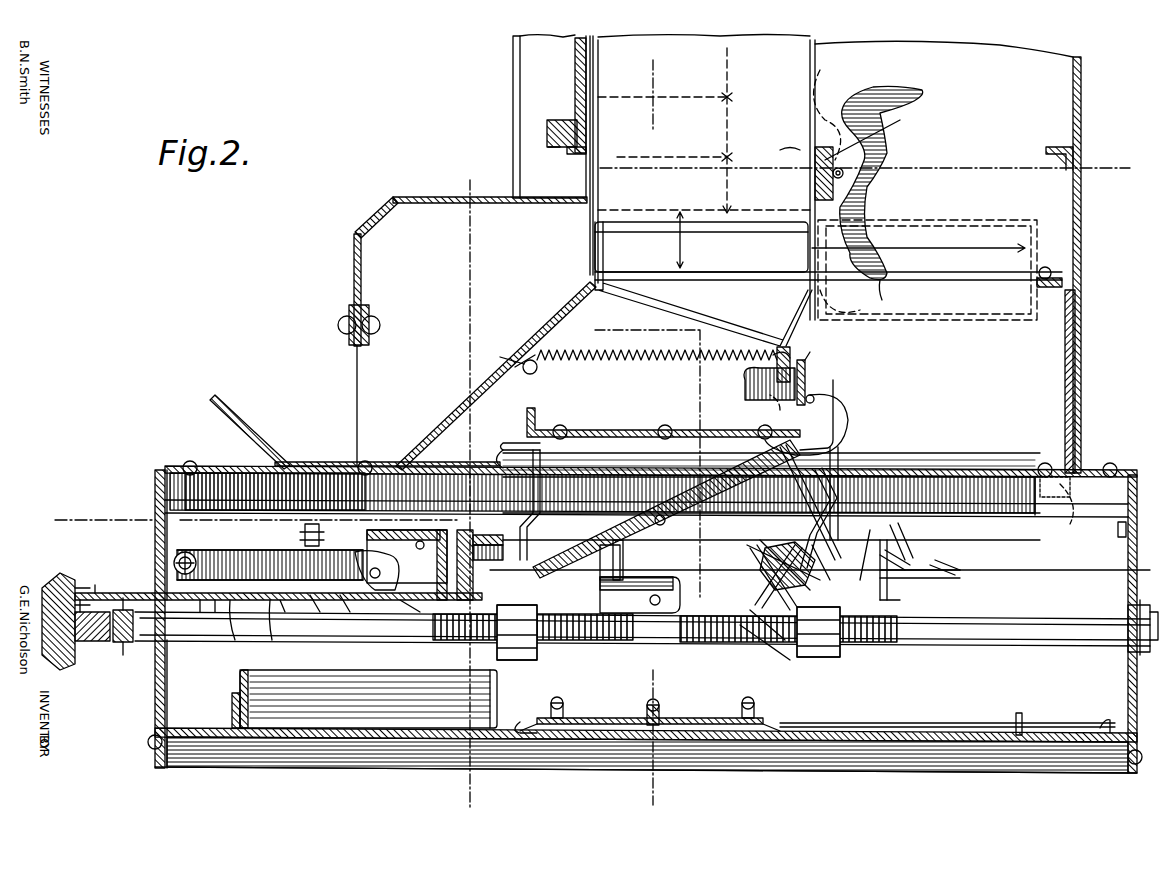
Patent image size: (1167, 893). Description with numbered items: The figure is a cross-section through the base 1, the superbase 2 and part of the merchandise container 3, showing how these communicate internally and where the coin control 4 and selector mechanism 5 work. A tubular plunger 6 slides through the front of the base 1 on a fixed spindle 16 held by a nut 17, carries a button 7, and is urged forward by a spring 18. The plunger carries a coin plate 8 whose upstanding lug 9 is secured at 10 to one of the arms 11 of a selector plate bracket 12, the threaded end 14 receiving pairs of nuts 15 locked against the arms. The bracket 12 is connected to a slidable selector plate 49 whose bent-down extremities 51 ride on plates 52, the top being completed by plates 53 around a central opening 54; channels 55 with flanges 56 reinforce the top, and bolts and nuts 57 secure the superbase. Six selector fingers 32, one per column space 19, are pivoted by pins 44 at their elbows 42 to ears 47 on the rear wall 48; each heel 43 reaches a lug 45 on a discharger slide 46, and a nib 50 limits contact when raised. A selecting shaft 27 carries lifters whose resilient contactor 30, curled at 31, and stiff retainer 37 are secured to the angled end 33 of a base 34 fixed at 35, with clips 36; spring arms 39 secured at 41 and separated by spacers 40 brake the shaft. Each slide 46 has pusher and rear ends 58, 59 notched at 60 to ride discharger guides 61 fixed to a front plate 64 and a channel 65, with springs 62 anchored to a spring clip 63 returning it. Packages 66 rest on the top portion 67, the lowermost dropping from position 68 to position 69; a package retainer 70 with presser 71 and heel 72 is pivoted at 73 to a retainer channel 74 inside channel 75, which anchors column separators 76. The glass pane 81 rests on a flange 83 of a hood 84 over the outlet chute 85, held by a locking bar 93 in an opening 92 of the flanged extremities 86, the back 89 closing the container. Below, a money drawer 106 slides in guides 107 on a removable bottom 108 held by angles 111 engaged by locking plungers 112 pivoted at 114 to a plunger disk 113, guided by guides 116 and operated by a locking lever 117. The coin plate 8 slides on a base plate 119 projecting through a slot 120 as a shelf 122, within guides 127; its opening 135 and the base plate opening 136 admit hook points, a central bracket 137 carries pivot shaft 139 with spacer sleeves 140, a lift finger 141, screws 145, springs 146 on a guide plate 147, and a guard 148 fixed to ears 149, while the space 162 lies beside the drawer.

The base 1 is at (143, 494).
The superbase 2 is at (340, 306).
The merchandise container 3 is at (497, 60).
The coin control 4 is at (477, 185).
The selector mechanism 5 is at (598, 87).
The tubular plunger 6 is at (150, 642).
The button 7 is at (65, 672).
The coin plate 8 is at (418, 642).
The upstanding lug 9 is at (462, 520).
The securing point 10 is at (490, 555).
The arms 11 is at (542, 492).
The selector plate bracket 12 is at (633, 430).
The threaded inner end 14 is at (880, 648).
The nuts 15 is at (535, 655).
The spindle 16 is at (990, 640).
The nut 17 is at (1125, 598).
The spring 18 is at (118, 642).
The column spaces 19 is at (760, 58).
The selecting shaft 27 is at (788, 575).
The resilient contactor 30 is at (760, 660).
The curled end 31 is at (808, 660).
The selector finger 32 is at (592, 440).
The angled end 33 is at (950, 560).
The base 34 is at (735, 580).
The securing point 35 is at (763, 552).
The clips 36 is at (930, 555).
The stiff retainer 37 is at (905, 540).
The spring arms 39 is at (680, 580).
The spacers 40 is at (612, 556).
The securing point 41 is at (640, 642).
The elbow 42 is at (818, 412).
The heel 43 is at (748, 388).
The pivot pin 44 is at (815, 398).
The lug 45 is at (792, 360).
The discharger slide 46 is at (786, 310).
The ears 47 is at (800, 402).
The rear upstanding wall 48 is at (812, 372).
The selector plate 49 is at (668, 428).
The nib 50 is at (560, 445).
The bent-down side extremities 51 is at (510, 440).
The plates 52 is at (940, 465).
The plates 53 is at (212, 462).
The central opening 54 is at (991, 461).
The channels 55 is at (1020, 505).
The flanges 56 is at (155, 540).
The bolts and nuts 57 is at (1085, 525).
The pusher end 58 is at (595, 238).
The rear end 59 is at (808, 258).
The notches 60 is at (600, 278).
The discharger guides 61 is at (930, 282).
The springs 62 is at (588, 357).
The spring clip 63 is at (522, 362).
The front plate 64 is at (540, 295).
The supporting and reinforcing channel 65 is at (1065, 372).
The cigarette packages 66 is at (742, 100).
The top portion 67 is at (732, 225).
The original position 68 is at (780, 128).
The dropped position 69 is at (685, 243).
The package retainer 70 is at (840, 150).
The blunt hook or presser 71 is at (870, 95).
The heel 72 is at (864, 296).
The pivot 73 is at (845, 172).
The retainer channel 74 is at (902, 118).
The channel 75 is at (791, 145).
The flanged column separators 76 is at (545, 225).
The glass pane 81 is at (576, 50).
The flange 83 is at (575, 152).
The hood 84 is at (392, 202).
The outlet chute 85 is at (406, 381).
The outer flanged extremities 86 is at (540, 72).
The back 89 is at (965, 256).
The opening 92 is at (540, 134).
The locking bar 93 is at (546, 140).
The money drawer 106 is at (258, 642).
The longitudinal guides 107 is at (232, 705).
The removable bottom 108 is at (790, 742).
The angles 111 is at (155, 735).
The locking plungers 112 is at (912, 713).
The plunger disk 113 is at (608, 718).
The pivots 114 is at (742, 700).
The guides 116 is at (1022, 715).
The locking lever 117 is at (562, 703).
The base plate 119 is at (298, 642).
The slot 120 is at (155, 592).
The shelf 122 is at (78, 585).
The guides 127 is at (600, 583).
The opening 135 is at (304, 536).
The opening 136 is at (370, 642).
The central bracket 137 is at (218, 642).
The pivot shaft 139 is at (180, 552).
The spacer sleeves 140 is at (197, 560).
The lift finger 141 is at (368, 699).
The screws 145 is at (312, 522).
The springs 146 is at (380, 545).
The guide plate 147 is at (444, 528).
The guard 148 is at (378, 485).
The ears 149 is at (400, 500).
The space 162 is at (207, 675).